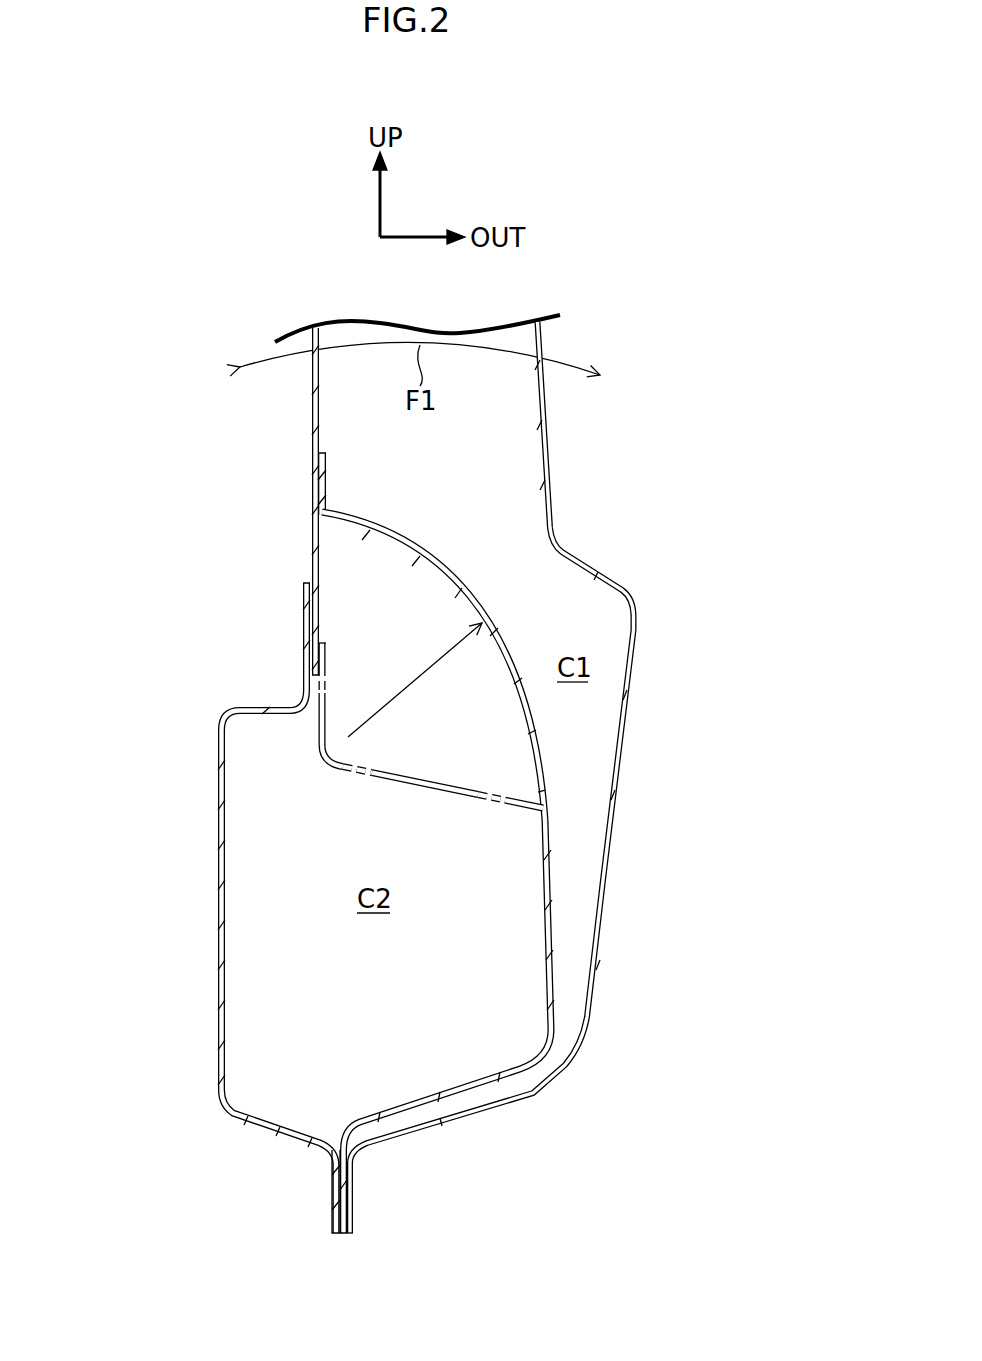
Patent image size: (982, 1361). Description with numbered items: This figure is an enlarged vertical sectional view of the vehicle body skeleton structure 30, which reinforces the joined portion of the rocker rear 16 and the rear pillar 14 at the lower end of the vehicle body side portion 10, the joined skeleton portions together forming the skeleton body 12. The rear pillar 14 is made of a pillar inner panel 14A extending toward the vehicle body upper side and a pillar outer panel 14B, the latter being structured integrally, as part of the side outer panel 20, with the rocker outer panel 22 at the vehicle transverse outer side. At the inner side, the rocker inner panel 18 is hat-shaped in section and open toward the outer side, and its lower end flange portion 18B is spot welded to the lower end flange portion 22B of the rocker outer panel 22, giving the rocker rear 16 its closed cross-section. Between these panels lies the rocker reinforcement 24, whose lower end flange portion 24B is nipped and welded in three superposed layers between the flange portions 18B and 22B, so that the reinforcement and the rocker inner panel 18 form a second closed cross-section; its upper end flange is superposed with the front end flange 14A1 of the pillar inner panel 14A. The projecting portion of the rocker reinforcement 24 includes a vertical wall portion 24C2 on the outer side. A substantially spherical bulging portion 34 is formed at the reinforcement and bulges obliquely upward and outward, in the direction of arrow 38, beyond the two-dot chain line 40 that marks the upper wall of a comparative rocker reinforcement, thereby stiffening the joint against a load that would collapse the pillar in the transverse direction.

The vehicle body side portion 10 is at (708, 375).
The skeleton body 12 is at (147, 560).
The rear pillar 14 is at (173, 392).
The pillar inner panel 14A is at (312, 413).
The front end flange 14A1 is at (318, 482).
The pillar outer panel 14B is at (547, 420).
The rocker rear 16 is at (708, 695).
The rocker inner panel 18 is at (202, 837).
The lower end flange portion 18B is at (332, 1197).
The side outer panel 20 is at (667, 590).
The rocker outer panel 22 is at (617, 937).
The lower end flange portion 22B is at (354, 1197).
The rocker reinforcement 24 is at (565, 987).
The lower end flange portion 24B is at (354, 1177).
The vertical wall portion 24C2 is at (560, 900).
The vehicle body skeleton structure 30 is at (683, 475).
The bulging portion 34 is at (495, 627).
The arrow 38 is at (418, 673).
The two-dot chain line / upper wall portion of comparative structure 40 is at (397, 767).